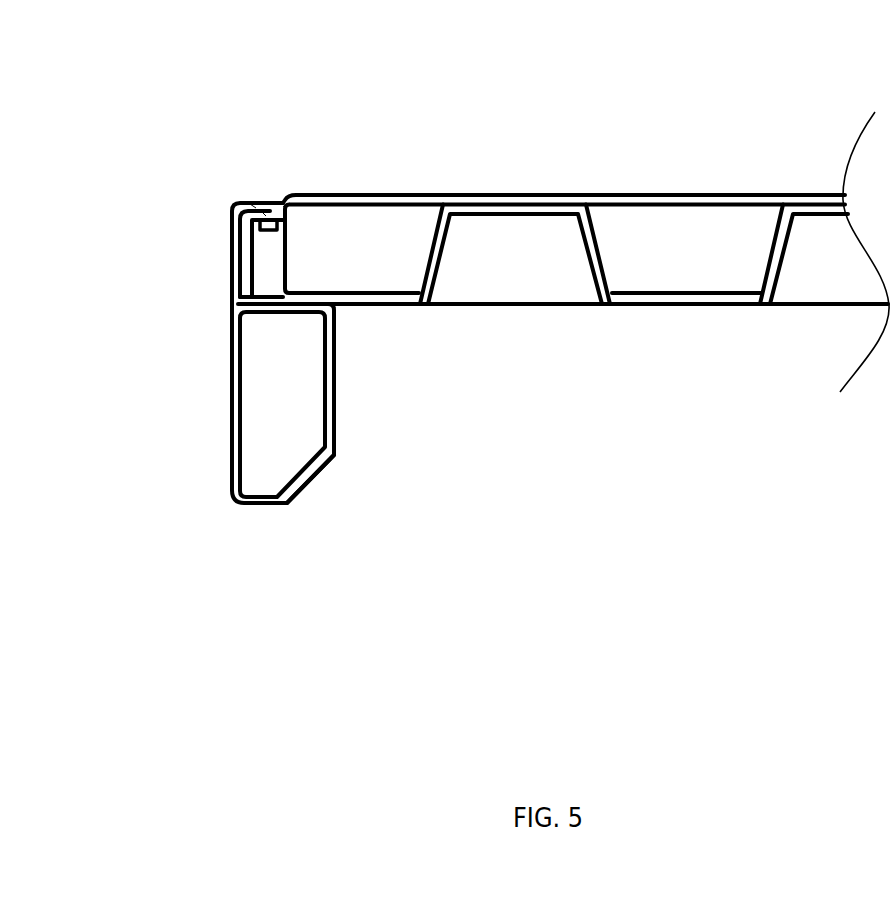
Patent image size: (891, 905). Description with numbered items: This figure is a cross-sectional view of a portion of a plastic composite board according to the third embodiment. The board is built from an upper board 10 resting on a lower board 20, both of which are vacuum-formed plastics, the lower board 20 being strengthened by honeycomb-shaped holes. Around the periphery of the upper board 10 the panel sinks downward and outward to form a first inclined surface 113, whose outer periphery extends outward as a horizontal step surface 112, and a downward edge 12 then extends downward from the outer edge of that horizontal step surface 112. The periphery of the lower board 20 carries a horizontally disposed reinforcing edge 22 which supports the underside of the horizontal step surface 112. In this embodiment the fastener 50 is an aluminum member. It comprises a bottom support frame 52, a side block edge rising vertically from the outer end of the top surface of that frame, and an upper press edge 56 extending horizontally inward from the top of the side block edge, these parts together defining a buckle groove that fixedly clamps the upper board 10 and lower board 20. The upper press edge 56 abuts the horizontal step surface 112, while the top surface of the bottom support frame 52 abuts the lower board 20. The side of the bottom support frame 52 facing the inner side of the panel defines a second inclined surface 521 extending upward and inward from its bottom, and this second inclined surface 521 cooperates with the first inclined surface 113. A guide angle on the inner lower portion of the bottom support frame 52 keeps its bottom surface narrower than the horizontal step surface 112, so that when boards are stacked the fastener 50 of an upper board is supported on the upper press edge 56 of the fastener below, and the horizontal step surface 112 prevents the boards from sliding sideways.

The upper board 10 is at (727, 196).
The downward edge 12 is at (245, 255).
The lower board 20 is at (739, 306).
The reinforcing edge 22 is at (276, 212).
The fastener 50 is at (232, 411).
The bottom support frame 52 is at (308, 368).
The upper press edge 56 is at (256, 207).
The horizontal step surface 112 is at (265, 212).
The first inclined surface 113 is at (283, 207).
The second inclined surface 521 is at (315, 468).